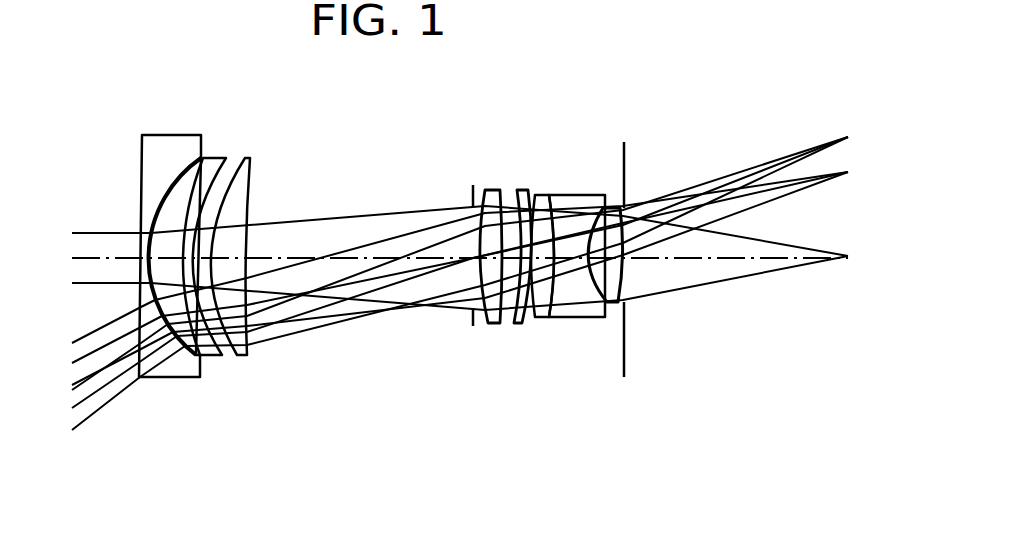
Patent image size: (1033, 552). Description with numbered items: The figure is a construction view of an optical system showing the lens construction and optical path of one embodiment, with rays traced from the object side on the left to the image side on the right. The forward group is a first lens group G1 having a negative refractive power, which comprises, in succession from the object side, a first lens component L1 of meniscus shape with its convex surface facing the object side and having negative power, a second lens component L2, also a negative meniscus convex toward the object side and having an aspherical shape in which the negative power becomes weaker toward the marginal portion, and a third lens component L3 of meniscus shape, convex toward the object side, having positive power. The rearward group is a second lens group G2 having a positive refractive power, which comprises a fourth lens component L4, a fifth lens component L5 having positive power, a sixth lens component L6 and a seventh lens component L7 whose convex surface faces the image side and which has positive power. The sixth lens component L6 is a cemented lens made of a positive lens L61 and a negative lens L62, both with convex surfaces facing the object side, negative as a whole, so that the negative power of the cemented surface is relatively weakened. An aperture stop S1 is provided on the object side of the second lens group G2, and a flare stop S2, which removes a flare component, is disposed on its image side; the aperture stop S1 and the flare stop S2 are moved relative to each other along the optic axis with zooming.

The first lens group G1 is at (265, 121).
The second lens group G2 is at (623, 103).
The first lens component L1 is at (182, 377).
The second lens component L2 is at (215, 357).
The third lens component L3 is at (243, 358).
The fourth lens component L4 is at (490, 327).
The fifth lens component L5 is at (520, 327).
The sixth lens component L6 is at (615, 331).
The positive lens L61 is at (545, 197).
The negative lens L62 is at (578, 198).
The seventh lens component L7 is at (622, 300).
The aperture stop S1 is at (472, 192).
The flare stop S2 is at (628, 173).